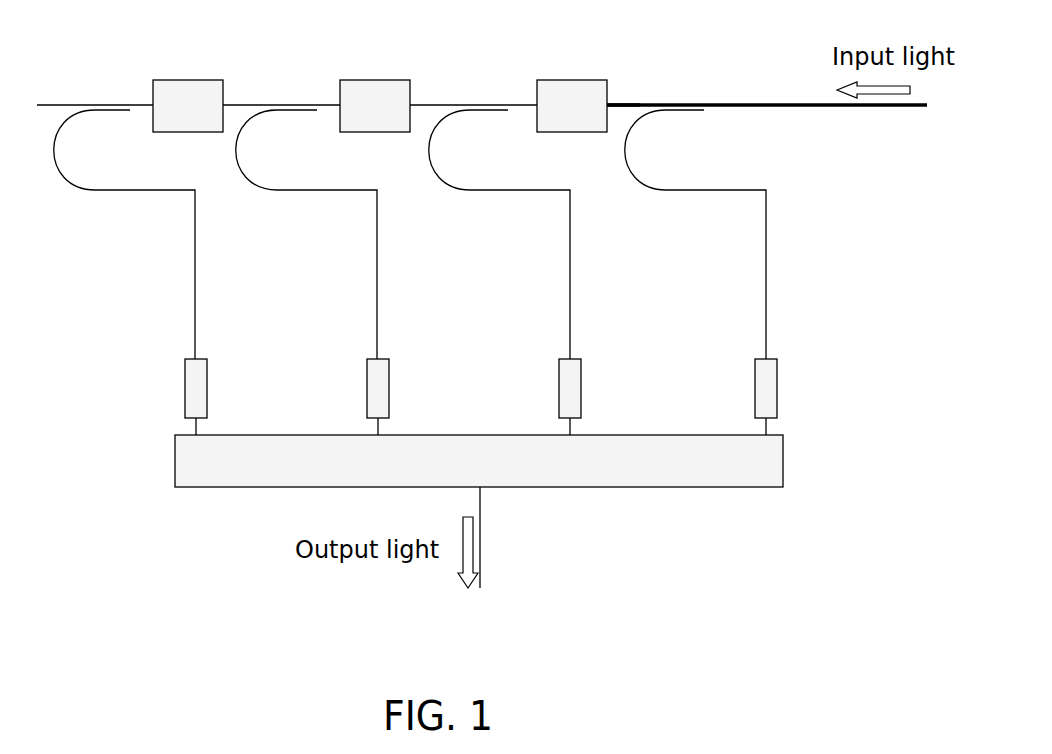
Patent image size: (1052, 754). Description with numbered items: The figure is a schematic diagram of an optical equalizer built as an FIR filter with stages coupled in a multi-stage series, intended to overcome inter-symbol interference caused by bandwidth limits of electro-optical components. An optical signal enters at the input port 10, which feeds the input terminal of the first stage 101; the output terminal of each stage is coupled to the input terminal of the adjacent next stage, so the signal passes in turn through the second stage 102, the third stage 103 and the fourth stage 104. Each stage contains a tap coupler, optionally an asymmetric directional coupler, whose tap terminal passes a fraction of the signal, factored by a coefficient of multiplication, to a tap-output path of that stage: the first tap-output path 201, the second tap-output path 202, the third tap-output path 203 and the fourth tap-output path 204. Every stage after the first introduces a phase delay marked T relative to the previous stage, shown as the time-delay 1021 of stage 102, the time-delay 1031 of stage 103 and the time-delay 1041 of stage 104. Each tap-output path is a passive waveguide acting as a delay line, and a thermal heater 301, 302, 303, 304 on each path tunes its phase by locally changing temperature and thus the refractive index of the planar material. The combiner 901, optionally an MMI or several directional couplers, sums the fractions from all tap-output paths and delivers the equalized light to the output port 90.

The input port 10 is at (885, 106).
The first stage 101 is at (695, 78).
The second stage 102 is at (497, 78).
The third stage 103 is at (297, 78).
The fourth stage 104 is at (116, 78).
The time-delay of stage 102 1021 is at (575, 80).
The time-delay of stage 103 1031 is at (393, 80).
The time-delay of stage 104 1041 is at (202, 80).
The first tap-output path 201 is at (695, 234).
The second tap-output path 202 is at (499, 234).
The third tap-output path 203 is at (306, 234).
The fourth tap-output path 204 is at (124, 234).
The thermal heater 301 is at (778, 370).
The thermal heater 302 is at (582, 370).
The thermal heater 303 is at (390, 370).
The thermal heater 304 is at (208, 370).
The combiner 901 is at (630, 475).
The output port 90 is at (480, 548).